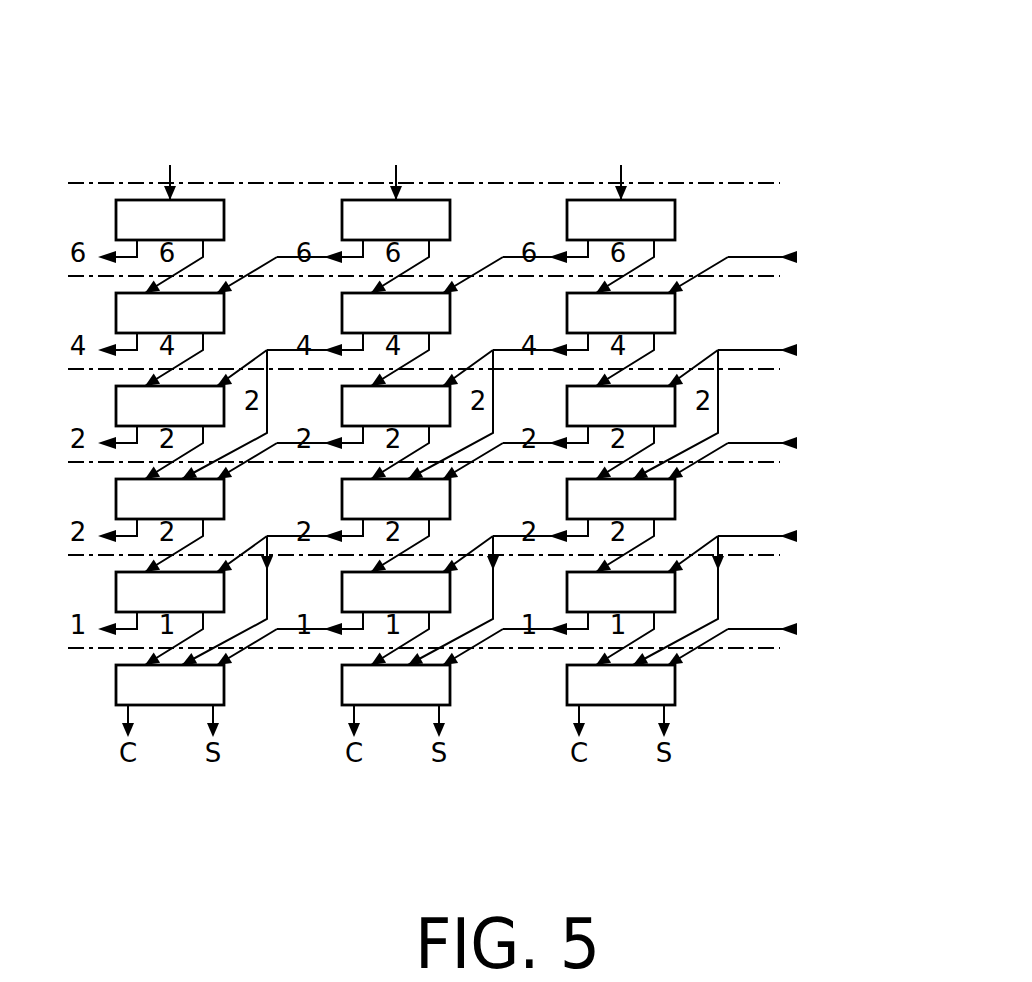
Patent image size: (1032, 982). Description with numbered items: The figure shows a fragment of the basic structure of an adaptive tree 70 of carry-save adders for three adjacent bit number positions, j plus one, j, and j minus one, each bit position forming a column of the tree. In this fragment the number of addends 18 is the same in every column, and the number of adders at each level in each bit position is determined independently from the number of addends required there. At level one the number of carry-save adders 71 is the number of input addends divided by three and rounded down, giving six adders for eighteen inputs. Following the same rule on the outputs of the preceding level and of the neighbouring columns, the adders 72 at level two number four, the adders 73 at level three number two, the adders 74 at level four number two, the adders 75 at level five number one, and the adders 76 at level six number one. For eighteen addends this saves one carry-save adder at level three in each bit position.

The adaptive tree 70 is at (768, 84).
The number of addends 18 is at (395, 166).
The carry-save adders at level 1 71 is at (342, 215).
The adders at level 2 72 is at (342, 308).
The adders at level 3 73 is at (342, 401).
The adders at level 4 74 is at (342, 494).
The adders at level 5 75 is at (342, 587).
The adders at level 6 76 is at (342, 680).